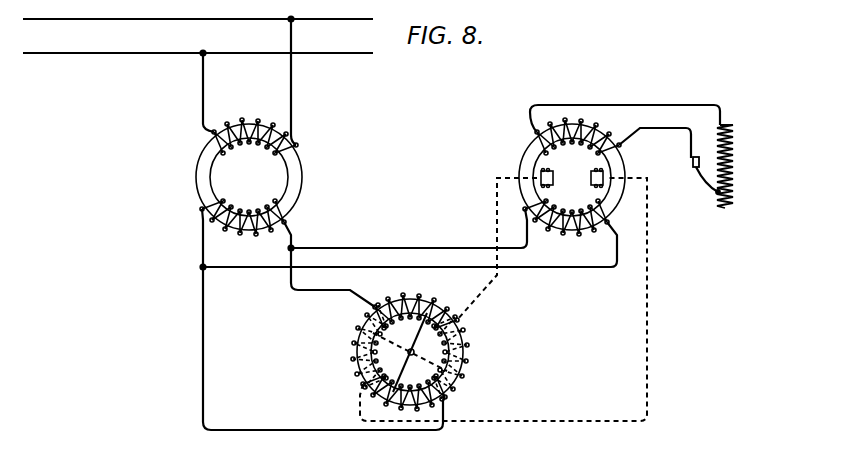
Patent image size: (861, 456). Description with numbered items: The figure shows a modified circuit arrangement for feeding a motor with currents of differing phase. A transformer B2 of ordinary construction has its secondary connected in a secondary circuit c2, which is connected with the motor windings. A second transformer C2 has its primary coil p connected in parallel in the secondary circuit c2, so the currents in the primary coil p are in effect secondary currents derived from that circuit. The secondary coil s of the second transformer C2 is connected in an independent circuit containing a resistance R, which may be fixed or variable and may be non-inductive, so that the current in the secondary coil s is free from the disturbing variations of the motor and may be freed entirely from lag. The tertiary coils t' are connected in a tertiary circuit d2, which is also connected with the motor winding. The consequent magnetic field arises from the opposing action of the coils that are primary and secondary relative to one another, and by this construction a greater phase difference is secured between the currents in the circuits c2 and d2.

The transformer B2 is at (249, 177).
The second transformer C2 is at (606, 179).
The secondary coil s is at (625, 131).
The primary coil p is at (566, 226).
The tertiary coils t' is at (572, 186).
The resistance R is at (724, 166).
The secondary circuit c2 is at (323, 319).
The tertiary circuit d2 is at (503, 299).